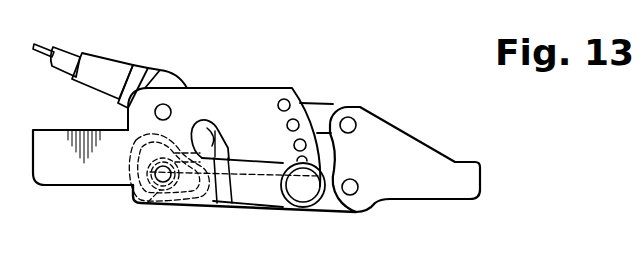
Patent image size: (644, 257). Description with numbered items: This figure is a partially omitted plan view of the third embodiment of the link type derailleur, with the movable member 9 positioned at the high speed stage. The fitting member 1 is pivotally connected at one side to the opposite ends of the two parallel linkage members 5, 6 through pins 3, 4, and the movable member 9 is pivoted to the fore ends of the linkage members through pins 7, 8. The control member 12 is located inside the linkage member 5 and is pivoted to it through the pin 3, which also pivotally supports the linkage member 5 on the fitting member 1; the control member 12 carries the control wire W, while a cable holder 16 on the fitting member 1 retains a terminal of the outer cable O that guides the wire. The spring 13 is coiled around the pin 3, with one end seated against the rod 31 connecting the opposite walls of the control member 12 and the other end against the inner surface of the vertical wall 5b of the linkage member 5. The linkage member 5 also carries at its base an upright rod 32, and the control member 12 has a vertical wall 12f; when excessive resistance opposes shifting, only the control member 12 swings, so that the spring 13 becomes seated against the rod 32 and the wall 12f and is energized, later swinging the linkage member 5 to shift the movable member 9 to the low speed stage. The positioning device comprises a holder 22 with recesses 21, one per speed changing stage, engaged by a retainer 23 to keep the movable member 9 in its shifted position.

The fitting member 1 is at (67, 184).
The control wire W is at (44, 42).
The outer cable O is at (69, 56).
The cable holder 16 is at (152, 72).
The holder 22 is at (235, 98).
The pin 4 is at (170, 108).
The recesses 21 is at (287, 97).
The linkage member 6 is at (323, 110).
The movable member 9 is at (476, 177).
The pin 8 is at (357, 125).
The pin 7 is at (353, 191).
The linkage member 5 is at (330, 208).
The pin 3 is at (164, 182).
The rod 31 is at (148, 155).
The rod 32 is at (149, 188).
The spring 13 is at (147, 203).
The control member 12 is at (267, 195).
The vertical wall 12f is at (185, 209).
The vertical wall 5b is at (235, 208).
The retainer 23 is at (303, 208).